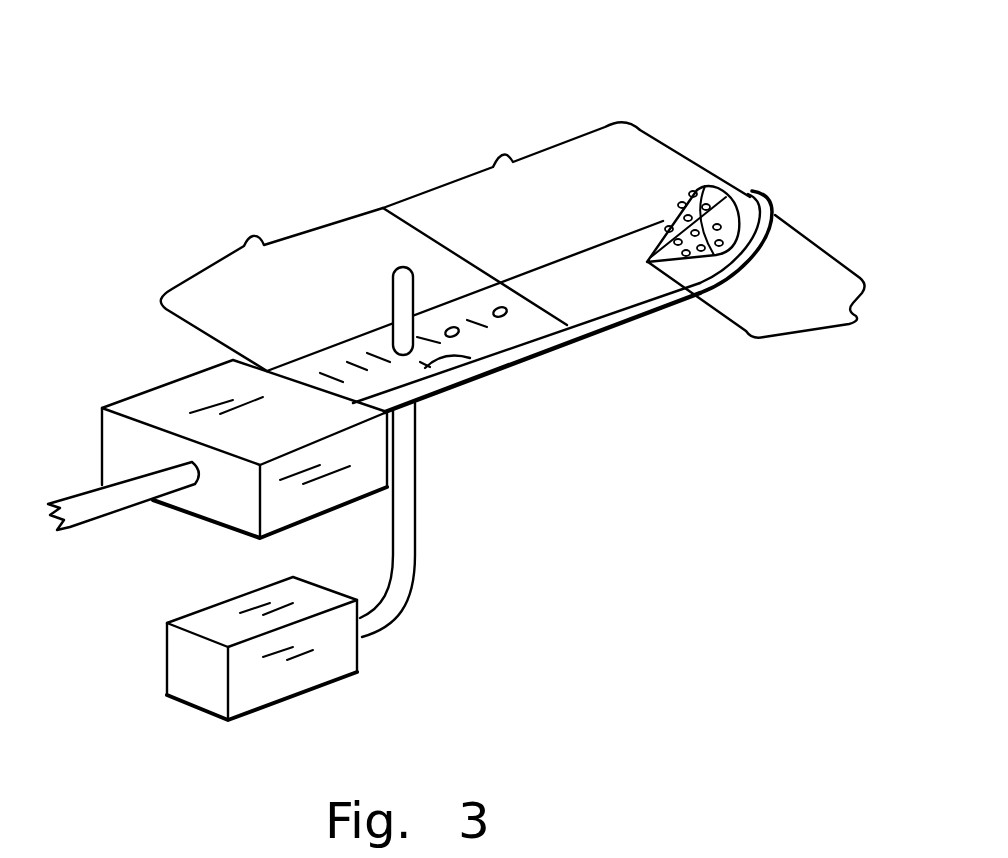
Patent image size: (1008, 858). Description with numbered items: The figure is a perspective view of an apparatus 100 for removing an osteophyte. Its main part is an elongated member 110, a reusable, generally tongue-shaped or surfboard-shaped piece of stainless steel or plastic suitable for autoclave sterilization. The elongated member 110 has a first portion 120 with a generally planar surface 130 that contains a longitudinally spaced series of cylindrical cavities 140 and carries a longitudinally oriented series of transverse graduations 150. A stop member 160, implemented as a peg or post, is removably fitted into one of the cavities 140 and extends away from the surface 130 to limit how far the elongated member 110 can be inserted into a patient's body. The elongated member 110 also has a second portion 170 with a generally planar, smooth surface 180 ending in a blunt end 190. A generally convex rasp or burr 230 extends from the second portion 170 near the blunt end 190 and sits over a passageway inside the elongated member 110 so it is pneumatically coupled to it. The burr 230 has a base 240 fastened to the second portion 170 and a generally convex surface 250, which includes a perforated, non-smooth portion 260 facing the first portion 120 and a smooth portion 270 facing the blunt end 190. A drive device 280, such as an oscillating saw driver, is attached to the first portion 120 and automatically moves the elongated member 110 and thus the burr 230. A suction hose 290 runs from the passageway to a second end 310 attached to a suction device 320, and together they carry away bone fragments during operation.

The apparatus for removing an osteophyte 100 is at (359, 95).
The elongated member 110 is at (691, 366).
The first portion 120 is at (272, 284).
The generally planar surface 130 is at (478, 368).
The cylindrical recesses or cavities 140 is at (329, 348).
The transverse markings or graduations 150 is at (522, 350).
The stop member 160 is at (402, 266).
The second portion 170 is at (566, 214).
The generally planar, smooth surface 180 is at (634, 292).
The blunt end 190 is at (772, 180).
The generally convex rasp or burr 230 is at (773, 290).
The base 240 is at (700, 248).
The generally convex surface 250 is at (639, 187).
The perforated, non-smooth portion 260 is at (663, 212).
The smooth portion 270 is at (753, 198).
The drive device 280 is at (205, 364).
The suction tube or hose 290 is at (446, 553).
The second end 310 is at (361, 638).
The suction device 320 is at (188, 706).